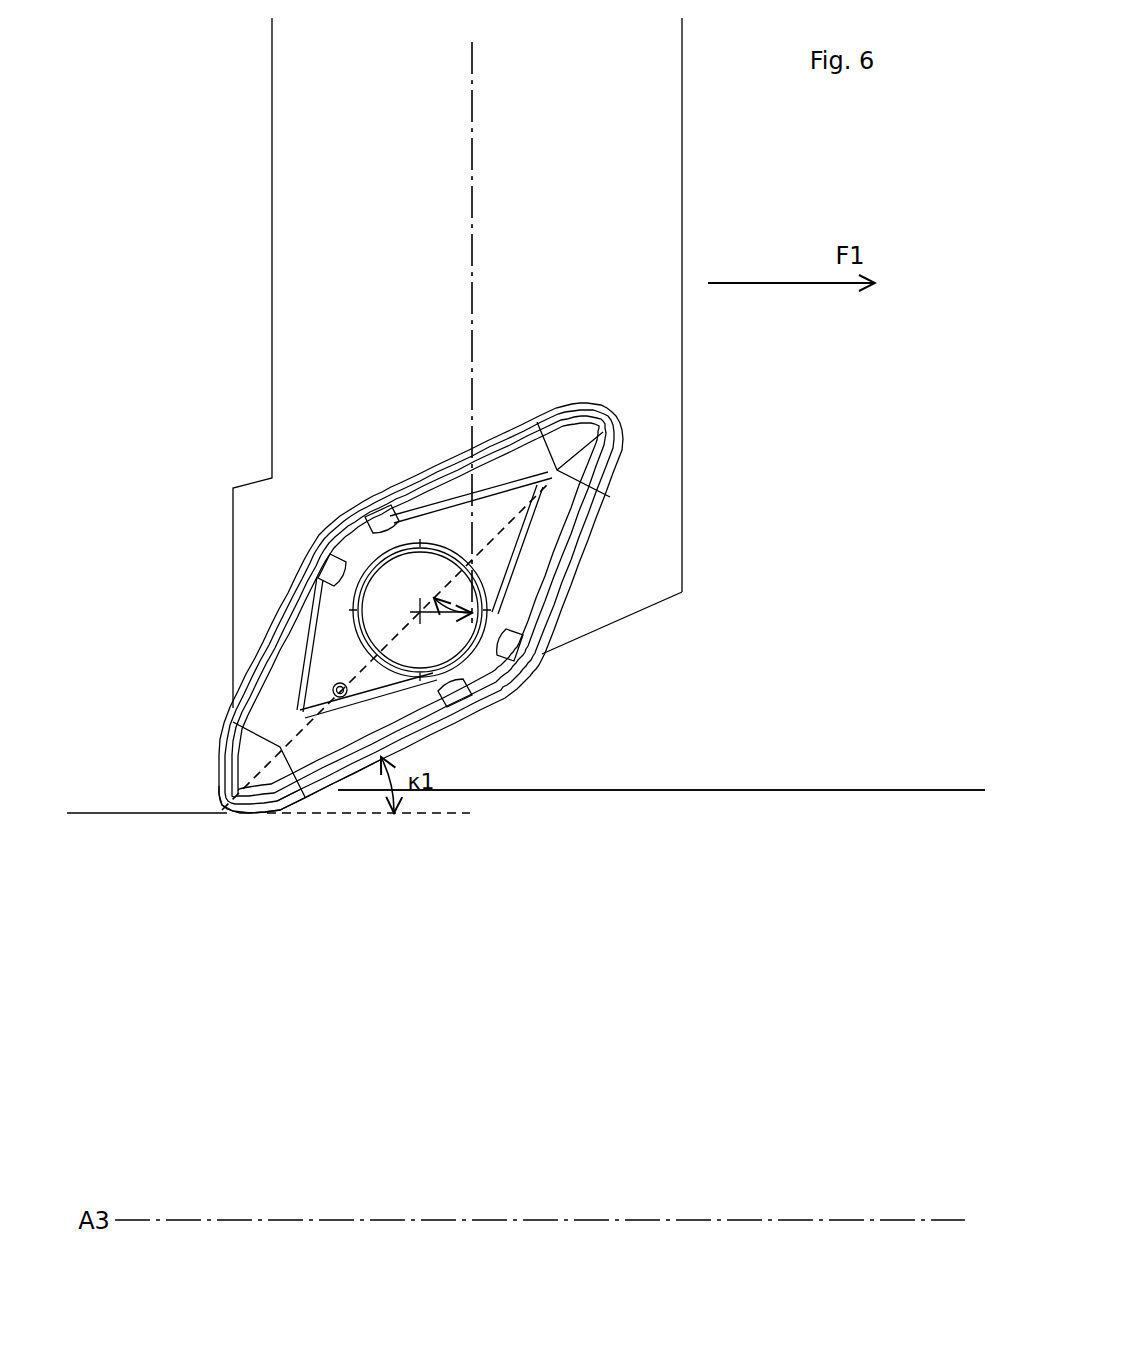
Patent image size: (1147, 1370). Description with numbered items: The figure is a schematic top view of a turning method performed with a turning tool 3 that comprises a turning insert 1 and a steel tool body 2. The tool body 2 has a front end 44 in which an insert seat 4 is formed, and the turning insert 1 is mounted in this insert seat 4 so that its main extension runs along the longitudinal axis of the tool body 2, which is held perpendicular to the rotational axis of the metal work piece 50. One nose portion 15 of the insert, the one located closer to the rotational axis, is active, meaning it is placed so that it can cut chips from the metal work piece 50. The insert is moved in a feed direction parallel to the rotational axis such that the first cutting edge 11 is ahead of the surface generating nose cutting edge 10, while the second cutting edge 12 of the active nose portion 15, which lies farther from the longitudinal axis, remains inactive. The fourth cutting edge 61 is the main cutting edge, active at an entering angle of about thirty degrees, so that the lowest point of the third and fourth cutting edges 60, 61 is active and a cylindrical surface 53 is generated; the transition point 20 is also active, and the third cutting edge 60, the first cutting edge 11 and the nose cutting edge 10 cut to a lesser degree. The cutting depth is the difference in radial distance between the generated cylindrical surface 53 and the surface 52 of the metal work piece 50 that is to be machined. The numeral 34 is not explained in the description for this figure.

The turning insert 1 is at (431, 414).
The tool body 2 is at (293, 262).
The turning tool 3 is at (259, 430).
The insert seat 4 is at (310, 581).
The nose cutting edge 10 is at (221, 808).
The first cutting edge 11 is at (257, 813).
The second cutting edge 12 is at (218, 777).
The active nose portion 15 is at (214, 716).
The transition point 20 is at (305, 797).
The chip breaker surface 34 is at (332, 740).
The front end 44 is at (603, 643).
The metal work piece 50 is at (679, 845).
The surface 52 is at (810, 790).
The cylindrical surface 53 is at (141, 813).
The third cutting edge 60 is at (288, 805).
The fourth cutting edge 61 is at (410, 755).